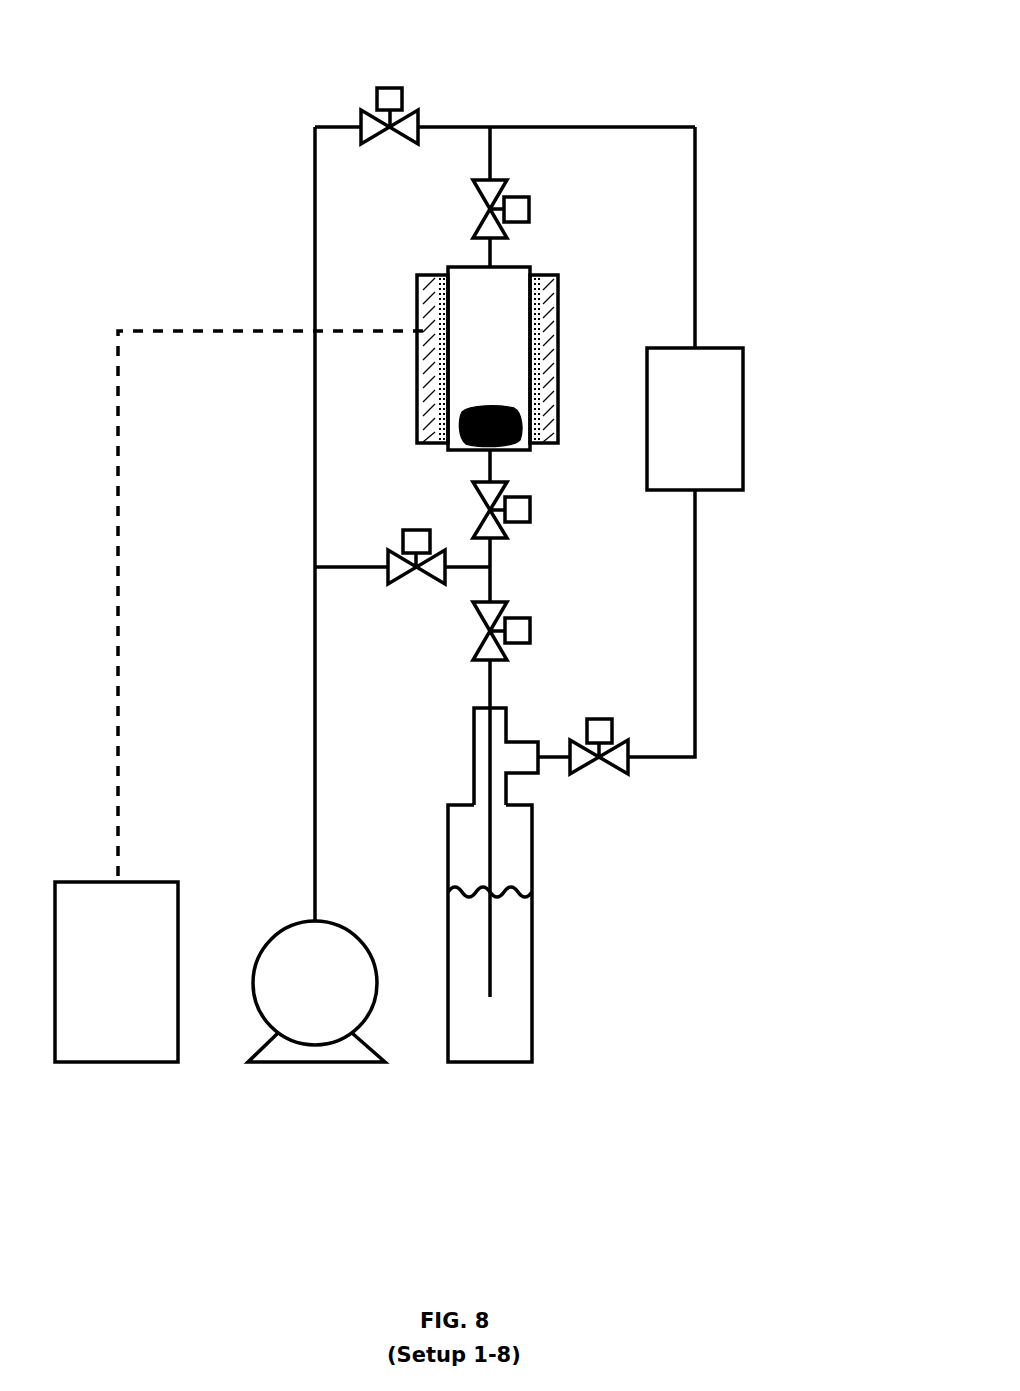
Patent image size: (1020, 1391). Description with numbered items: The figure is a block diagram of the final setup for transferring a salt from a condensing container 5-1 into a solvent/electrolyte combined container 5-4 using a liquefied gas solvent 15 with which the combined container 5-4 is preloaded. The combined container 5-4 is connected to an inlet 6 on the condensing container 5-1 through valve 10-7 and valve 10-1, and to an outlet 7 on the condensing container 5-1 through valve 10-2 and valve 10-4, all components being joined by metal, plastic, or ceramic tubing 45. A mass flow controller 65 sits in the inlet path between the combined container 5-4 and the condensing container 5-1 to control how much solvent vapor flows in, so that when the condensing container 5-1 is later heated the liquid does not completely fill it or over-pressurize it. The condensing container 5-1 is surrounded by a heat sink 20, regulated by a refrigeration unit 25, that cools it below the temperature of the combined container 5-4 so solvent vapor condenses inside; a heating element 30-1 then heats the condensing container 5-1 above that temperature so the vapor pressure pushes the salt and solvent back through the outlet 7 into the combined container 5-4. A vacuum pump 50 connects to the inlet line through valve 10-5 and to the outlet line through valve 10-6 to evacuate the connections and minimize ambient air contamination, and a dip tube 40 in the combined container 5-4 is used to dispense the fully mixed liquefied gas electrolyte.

The condensing container 5-1 is at (517, 267).
The solvent/electrolyte combined container 5-4 is at (532, 872).
The inlet 6 is at (483, 267).
The outlet 7 is at (482, 452).
The valve 10-1 is at (521, 197).
The valve 10-2 is at (530, 500).
The valve 10-4 is at (530, 628).
The valve 10-5 is at (390, 88).
The valve 10-6 is at (432, 568).
The valve 10-7 is at (605, 765).
The liquefied gas solvent 15 is at (520, 1018).
The heat sink 20 is at (548, 387).
The refrigeration unit 25 is at (178, 900).
The heating element 30-1 is at (543, 328).
The dip tube 40 is at (490, 742).
The tubing 45 is at (695, 200).
The vacuum pump 50 is at (325, 921).
The mass flow controller 65 is at (743, 425).